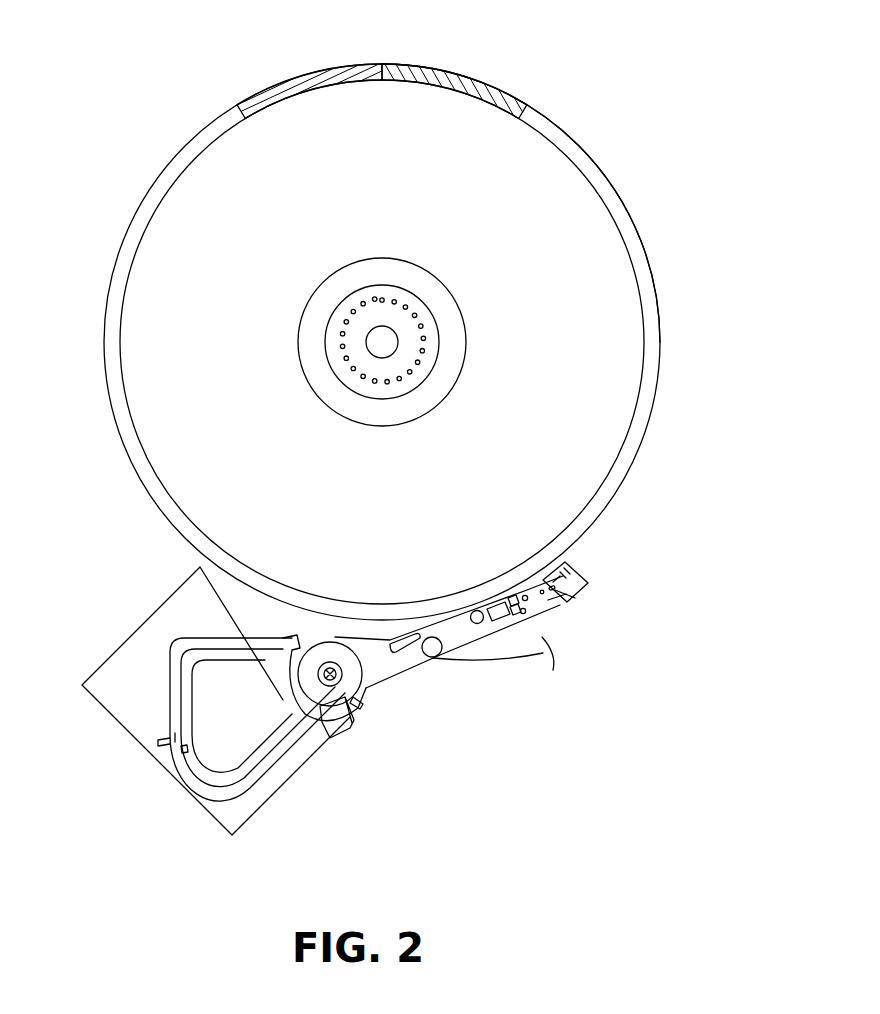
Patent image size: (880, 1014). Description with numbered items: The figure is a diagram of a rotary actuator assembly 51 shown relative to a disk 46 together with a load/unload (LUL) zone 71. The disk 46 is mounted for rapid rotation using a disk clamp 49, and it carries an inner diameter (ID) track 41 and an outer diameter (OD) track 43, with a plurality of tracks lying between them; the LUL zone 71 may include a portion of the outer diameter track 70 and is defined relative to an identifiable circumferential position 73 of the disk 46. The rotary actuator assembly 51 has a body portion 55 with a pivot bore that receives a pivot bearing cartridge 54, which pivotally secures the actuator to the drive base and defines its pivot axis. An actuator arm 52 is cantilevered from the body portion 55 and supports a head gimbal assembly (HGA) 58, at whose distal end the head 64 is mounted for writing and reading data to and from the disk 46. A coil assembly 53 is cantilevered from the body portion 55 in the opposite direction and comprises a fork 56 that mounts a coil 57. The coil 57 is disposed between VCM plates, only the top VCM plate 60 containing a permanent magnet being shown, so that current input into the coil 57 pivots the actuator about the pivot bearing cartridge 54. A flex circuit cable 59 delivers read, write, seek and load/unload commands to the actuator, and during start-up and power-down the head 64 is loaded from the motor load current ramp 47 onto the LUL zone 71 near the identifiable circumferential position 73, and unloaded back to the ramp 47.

The inner diameter (ID) track 41 is at (435, 278).
The outer diameter (OD) track 43 is at (663, 333).
The disk 46 is at (126, 384).
The motor load current ramp 47 is at (578, 596).
The disk clamp 49 is at (325, 347).
The rotary actuator assembly 51 is at (361, 681).
The actuator arm 52 is at (390, 668).
The coil assembly 53 is at (195, 621).
The pivot bearing cartridge 54 is at (326, 666).
The body portion 55 is at (357, 705).
The fork 56 is at (300, 738).
The coil 57 is at (255, 758).
The head gimbal assembly (HGA) 58 is at (553, 594).
The flex circuit cable 59 is at (490, 664).
The VCM plate 60 is at (226, 717).
The head 64 is at (578, 580).
The outer diameter track 70 is at (577, 128).
The load/unload (LUL) zone 71 is at (311, 73).
The identifiable circumferential position 73 is at (392, 64).